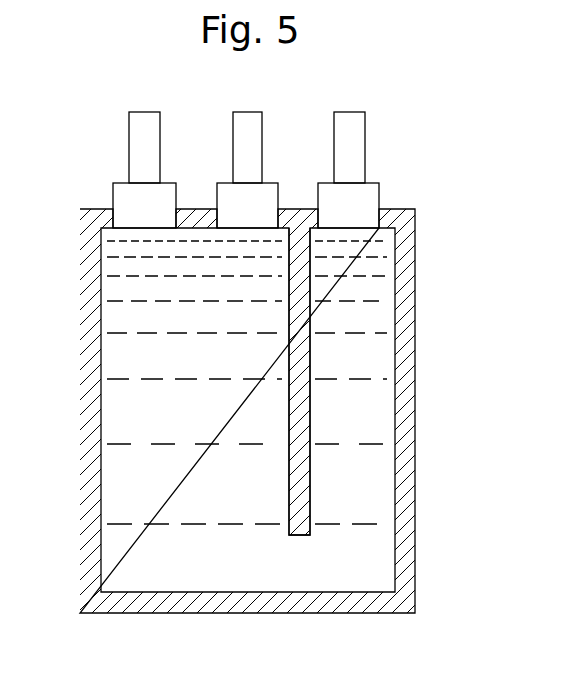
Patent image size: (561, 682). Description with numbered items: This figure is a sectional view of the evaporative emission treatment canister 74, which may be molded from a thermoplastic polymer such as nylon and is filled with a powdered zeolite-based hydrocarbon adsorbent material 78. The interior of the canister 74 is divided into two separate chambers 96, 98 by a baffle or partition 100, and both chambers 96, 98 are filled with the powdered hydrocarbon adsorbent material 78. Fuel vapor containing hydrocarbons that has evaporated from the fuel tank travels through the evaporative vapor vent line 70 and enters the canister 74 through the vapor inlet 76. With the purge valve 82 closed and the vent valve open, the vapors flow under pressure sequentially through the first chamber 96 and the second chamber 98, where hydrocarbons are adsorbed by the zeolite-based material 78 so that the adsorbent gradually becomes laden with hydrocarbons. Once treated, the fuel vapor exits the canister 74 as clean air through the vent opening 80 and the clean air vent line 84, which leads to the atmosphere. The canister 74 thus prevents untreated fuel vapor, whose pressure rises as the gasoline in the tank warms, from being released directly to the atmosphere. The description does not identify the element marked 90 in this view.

The evaporative vapor vent line 70 is at (129, 123).
The vapor inlet 76 is at (113, 192).
The second terminal post 90 is at (262, 117).
The purge valve 82 is at (278, 184).
The clean air vent line 84 is at (365, 128).
The vent opening 80 is at (379, 198).
The canister 74 is at (415, 523).
The powdered zeolite-based hydrocarbon adsorbent material 78 is at (208, 497).
The first chamber 96 is at (148, 346).
The second chamber 98 is at (368, 330).
The baffle or partition 100 is at (299, 397).